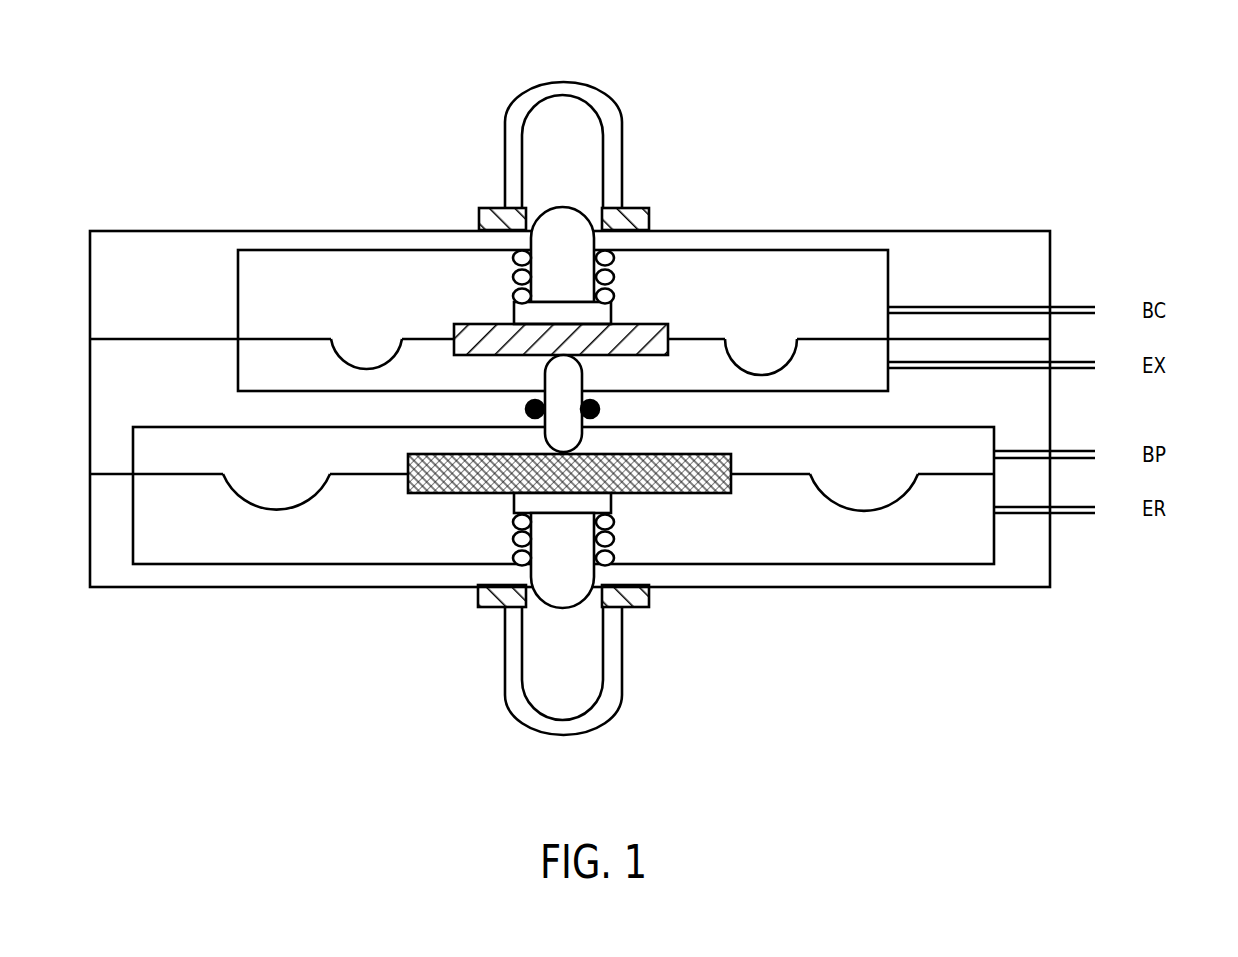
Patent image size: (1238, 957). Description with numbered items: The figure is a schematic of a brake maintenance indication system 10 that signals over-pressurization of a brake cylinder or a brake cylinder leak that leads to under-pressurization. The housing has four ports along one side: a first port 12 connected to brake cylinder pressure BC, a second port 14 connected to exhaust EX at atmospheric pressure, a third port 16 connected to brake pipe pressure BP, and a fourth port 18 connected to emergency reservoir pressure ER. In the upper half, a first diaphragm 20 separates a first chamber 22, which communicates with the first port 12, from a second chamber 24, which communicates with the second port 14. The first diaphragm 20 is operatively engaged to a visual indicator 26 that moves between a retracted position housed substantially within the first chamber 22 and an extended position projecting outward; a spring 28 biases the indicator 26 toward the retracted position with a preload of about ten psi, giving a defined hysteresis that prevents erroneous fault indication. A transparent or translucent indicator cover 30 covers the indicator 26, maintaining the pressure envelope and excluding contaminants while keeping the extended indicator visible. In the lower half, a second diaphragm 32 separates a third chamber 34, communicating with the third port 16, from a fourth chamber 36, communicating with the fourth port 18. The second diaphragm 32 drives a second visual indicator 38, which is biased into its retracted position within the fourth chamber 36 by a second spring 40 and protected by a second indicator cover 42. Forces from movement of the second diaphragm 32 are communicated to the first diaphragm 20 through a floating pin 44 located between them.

The brake maintenance indication system 10 is at (320, 93).
The first port 12 is at (1064, 306).
The second port 14 is at (1064, 370).
The third port 16 is at (1072, 451).
The fourth port 18 is at (1064, 515).
The first diaphragm 20 is at (286, 338).
The first chamber 22 is at (355, 275).
The second chamber 24 is at (839, 363).
The visual indicator 26 is at (564, 206).
The spring 28 is at (625, 279).
The indicator cover 30 is at (508, 103).
The second diaphragm 32 is at (177, 476).
The third chamber 34 is at (163, 445).
The fourth chamber 36 is at (316, 545).
The second visual indicator 38 is at (548, 609).
The second spring 40 is at (625, 539).
The second indicator cover 42 is at (632, 690).
The floating pin 44 is at (585, 388).